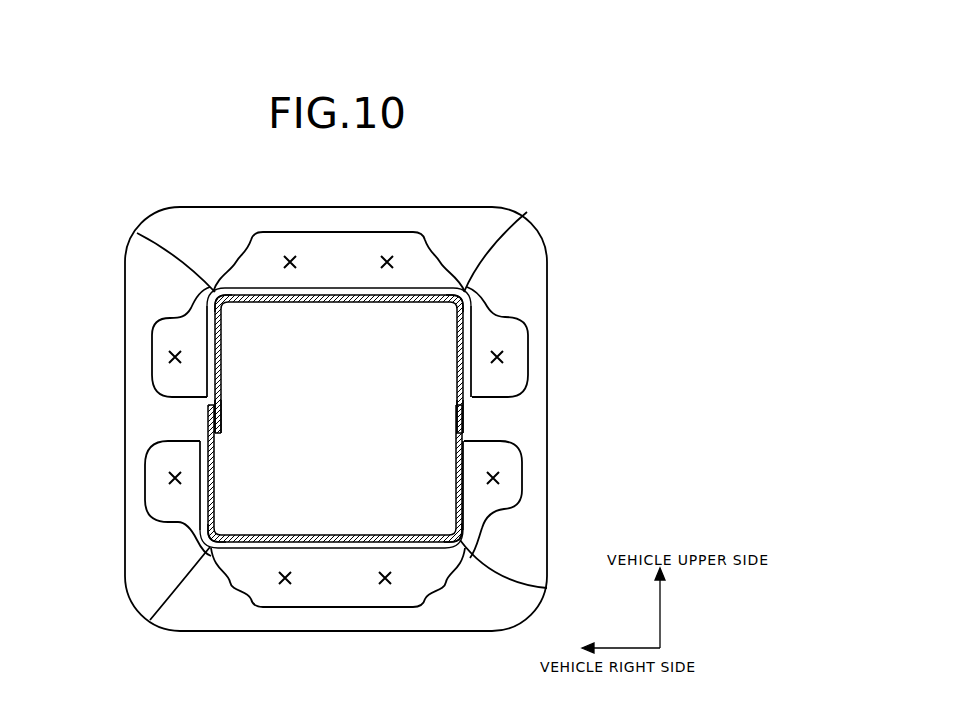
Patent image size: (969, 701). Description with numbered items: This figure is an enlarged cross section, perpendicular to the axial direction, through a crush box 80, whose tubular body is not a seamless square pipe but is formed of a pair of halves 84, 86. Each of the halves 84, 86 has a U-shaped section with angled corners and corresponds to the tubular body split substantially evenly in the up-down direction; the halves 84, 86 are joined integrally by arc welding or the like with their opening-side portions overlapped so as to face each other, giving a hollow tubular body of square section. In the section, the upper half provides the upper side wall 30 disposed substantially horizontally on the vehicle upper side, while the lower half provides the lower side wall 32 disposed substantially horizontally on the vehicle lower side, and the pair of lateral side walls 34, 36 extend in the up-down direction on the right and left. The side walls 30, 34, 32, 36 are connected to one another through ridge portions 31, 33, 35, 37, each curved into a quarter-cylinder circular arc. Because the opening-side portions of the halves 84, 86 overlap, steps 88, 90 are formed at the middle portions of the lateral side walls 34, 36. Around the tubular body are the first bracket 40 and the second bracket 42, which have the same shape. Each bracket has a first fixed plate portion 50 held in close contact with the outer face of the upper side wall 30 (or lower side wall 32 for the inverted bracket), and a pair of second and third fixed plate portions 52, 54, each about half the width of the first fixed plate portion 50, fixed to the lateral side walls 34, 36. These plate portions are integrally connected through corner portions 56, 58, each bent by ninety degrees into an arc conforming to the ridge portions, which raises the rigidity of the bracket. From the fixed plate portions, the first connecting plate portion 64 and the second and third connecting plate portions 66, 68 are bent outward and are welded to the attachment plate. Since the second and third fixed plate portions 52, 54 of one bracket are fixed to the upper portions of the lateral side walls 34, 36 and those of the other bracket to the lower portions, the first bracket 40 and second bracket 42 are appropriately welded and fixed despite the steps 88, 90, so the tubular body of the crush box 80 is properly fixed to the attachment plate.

The upper side wall 30 is at (323, 306).
The ridge portion 31 is at (452, 305).
The lower side wall 32 is at (320, 537).
The ridge portion 33 is at (445, 533).
The lateral side wall 34 is at (458, 383).
The ridge portion 35 is at (225, 533).
The lateral side wall 36 is at (217, 413).
The ridge portion 37 is at (228, 305).
The first bracket 40 is at (477, 247).
The second bracket 42 is at (224, 597).
The first fixed plate portion 50 is at (357, 296).
The second fixed plate portion 52 is at (469, 333).
The third fixed plate portion 54 is at (206, 333).
The corner portion 56 is at (527, 212).
The corner portion 58 is at (137, 233).
The first connecting plate portion 64 is at (328, 243).
The second connecting plate portion 66 is at (514, 360).
The third connecting plate portion 68 is at (164, 358).
The crush box 80 is at (604, 218).
The half 84 is at (267, 290).
The half 86 is at (416, 553).
The step 88 is at (475, 431).
The step 90 is at (201, 406).